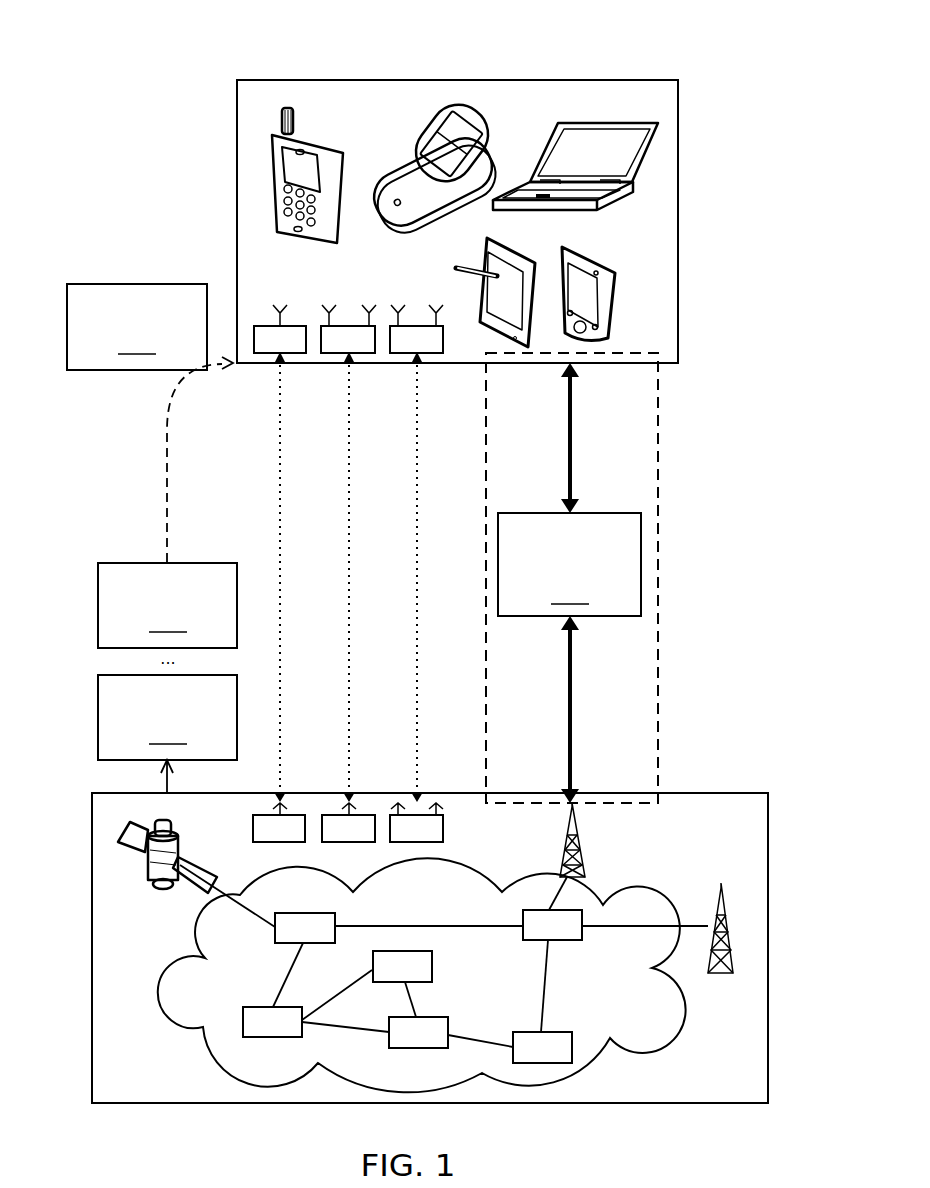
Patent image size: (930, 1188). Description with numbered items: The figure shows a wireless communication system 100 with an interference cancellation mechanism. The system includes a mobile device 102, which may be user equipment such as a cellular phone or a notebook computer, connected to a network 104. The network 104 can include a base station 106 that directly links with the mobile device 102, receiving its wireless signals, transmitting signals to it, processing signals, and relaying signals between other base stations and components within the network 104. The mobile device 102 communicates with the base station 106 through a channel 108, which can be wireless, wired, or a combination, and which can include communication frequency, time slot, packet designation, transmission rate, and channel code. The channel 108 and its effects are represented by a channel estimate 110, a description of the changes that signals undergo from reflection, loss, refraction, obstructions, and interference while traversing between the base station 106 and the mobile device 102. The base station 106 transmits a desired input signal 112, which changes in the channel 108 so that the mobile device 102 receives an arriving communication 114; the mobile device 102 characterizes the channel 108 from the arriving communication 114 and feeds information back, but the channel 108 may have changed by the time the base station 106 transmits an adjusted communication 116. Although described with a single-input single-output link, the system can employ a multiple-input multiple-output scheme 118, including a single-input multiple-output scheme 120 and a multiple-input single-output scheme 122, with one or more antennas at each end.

The wireless communication system 100 is at (157, 42).
The mobile device 102 is at (638, 100).
The network 104 is at (727, 815).
The base station 106 is at (733, 957).
The channel 108 is at (623, 395).
The channel estimate 110 is at (569, 564).
The desired input signal 112 is at (167, 605).
The arriving communication 114 is at (150, 423).
The adjusted communication 116 is at (167, 734).
The multiple-input multiple-output scheme 118 is at (279, 400).
The single-input multiple-output scheme 120 is at (417, 527).
The multiple-input single-output scheme 122 is at (348, 435).